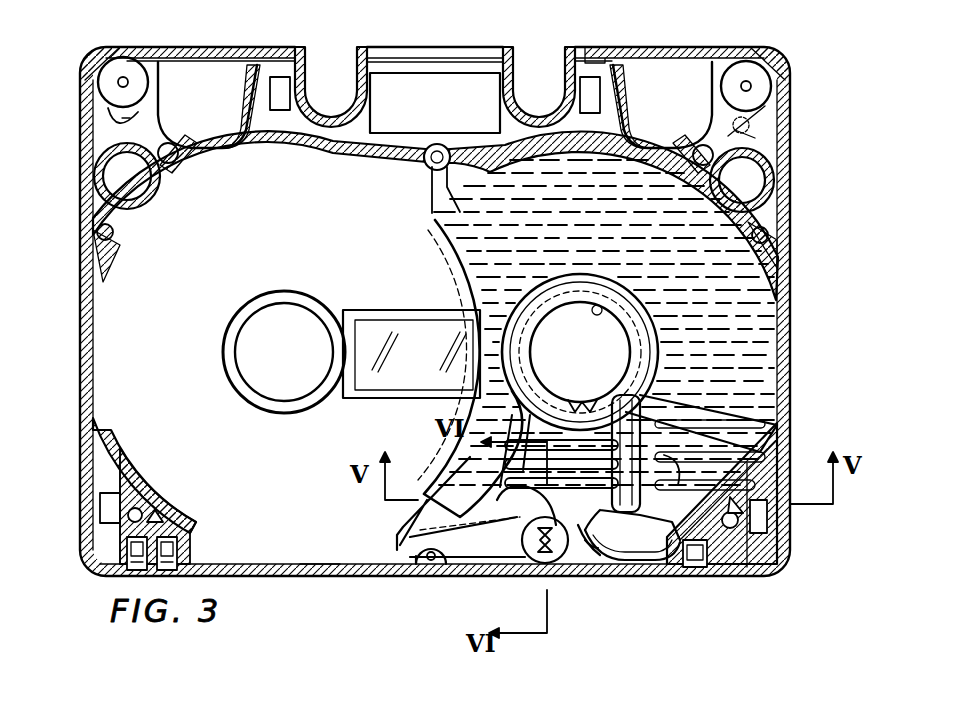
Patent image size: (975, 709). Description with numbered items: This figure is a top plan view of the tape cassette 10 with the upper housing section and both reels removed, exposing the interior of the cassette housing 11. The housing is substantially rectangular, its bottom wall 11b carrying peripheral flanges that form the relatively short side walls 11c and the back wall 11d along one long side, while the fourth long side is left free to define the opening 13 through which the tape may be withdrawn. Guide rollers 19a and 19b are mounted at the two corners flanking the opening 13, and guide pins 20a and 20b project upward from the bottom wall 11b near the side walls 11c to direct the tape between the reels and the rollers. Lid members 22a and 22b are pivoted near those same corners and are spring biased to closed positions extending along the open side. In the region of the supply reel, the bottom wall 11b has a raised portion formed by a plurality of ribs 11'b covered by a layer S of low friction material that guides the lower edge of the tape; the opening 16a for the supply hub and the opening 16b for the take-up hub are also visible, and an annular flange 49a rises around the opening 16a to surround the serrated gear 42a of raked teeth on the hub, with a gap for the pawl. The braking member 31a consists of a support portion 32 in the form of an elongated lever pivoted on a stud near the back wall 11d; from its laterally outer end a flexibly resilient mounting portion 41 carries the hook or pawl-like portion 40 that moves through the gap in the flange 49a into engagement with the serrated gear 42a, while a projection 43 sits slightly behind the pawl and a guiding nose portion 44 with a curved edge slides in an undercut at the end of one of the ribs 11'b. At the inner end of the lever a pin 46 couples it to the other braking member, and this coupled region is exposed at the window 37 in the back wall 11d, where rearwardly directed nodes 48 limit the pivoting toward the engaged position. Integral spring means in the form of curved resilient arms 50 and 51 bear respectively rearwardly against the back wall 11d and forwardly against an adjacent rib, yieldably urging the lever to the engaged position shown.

The tape cassette 10 is at (590, 50).
The cassette housing 11 is at (435, 147).
The bottom wall 11b is at (279, 560).
The side walls 11c is at (80, 350).
The back wall 11d is at (320, 573).
The ribs 11'b is at (708, 486).
The opening 13 is at (326, 53).
The opening in bottom wall 16a is at (602, 310).
The opening in top wall 16b is at (246, 370).
The guide roller 19a is at (788, 62).
The guide roller 19b is at (124, 58).
The guide pin 20a is at (772, 240).
The guide pin 20b is at (98, 228).
The lid member 22a is at (732, 58).
The lid member 22b is at (160, 60).
The braking member 31a is at (590, 550).
The support portion 32 is at (583, 537).
The opening or window 37 is at (438, 573).
The hook or pawl-like portion 40 is at (606, 430).
The flexibly resilient mounting portion 41 is at (640, 393).
The serrated gear 42a is at (589, 412).
The projection 43 is at (632, 523).
The guiding nose portion 44 is at (652, 502).
The pin 46 is at (430, 570).
The nodes 48 is at (483, 575).
The annular flange 49a is at (513, 305).
The curved resilient arm 50 is at (648, 570).
The curved resilient arm 51 is at (472, 458).
The layer of low friction material S is at (450, 234).